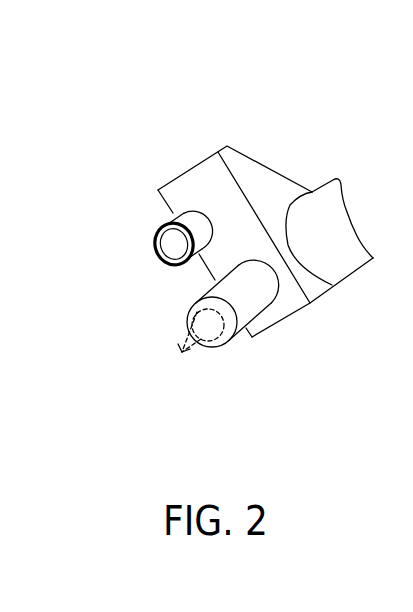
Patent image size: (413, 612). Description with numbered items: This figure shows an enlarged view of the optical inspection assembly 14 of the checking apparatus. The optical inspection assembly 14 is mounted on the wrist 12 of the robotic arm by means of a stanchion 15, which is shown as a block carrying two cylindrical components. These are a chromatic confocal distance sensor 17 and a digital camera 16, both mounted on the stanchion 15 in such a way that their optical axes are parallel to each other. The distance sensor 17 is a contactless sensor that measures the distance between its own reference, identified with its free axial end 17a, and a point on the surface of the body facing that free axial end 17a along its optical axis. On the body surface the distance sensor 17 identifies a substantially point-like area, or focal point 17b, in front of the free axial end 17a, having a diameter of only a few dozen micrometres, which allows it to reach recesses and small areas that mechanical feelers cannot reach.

The optical inspection assembly 14 is at (300, 137).
The stanchion 15 is at (243, 165).
The digital camera 16 is at (192, 220).
The chromatic confocal distance sensor 17 is at (252, 302).
The free axial end 17a is at (190, 315).
The focal point 17b is at (185, 356).
The wrist 12 is at (335, 212).